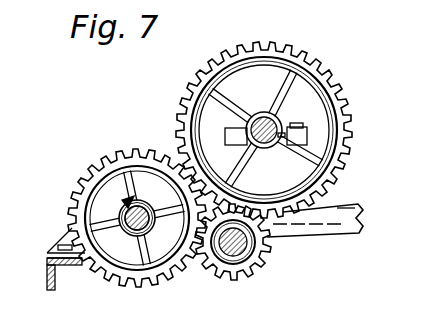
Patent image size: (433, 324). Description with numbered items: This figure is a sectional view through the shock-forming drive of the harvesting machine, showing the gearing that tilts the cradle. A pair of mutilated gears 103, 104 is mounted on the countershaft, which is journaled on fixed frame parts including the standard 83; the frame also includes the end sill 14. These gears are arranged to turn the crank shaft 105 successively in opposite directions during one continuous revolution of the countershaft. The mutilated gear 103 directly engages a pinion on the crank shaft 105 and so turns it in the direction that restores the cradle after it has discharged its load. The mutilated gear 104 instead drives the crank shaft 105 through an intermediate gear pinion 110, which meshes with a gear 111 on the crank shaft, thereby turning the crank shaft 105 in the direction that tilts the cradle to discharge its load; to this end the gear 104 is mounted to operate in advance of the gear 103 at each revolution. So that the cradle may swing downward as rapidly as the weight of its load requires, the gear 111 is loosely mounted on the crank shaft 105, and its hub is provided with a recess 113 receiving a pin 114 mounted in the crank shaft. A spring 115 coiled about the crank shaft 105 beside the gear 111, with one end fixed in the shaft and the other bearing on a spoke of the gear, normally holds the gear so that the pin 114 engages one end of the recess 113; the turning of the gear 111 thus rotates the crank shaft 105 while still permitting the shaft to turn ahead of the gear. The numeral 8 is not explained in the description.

The mutilated gear 103 is at (308, 57).
The mutilated gear 104 is at (345, 105).
The standard 83 is at (290, 172).
The gear 111 is at (76, 218).
The gear rim 8 is at (84, 166).
The pin 114 is at (117, 205).
The recess 113 is at (122, 203).
The crank shaft 105 is at (155, 140).
The spring 115 is at (137, 205).
The intermediate gear pinion 110 is at (250, 278).
The end sill 14 is at (53, 290).